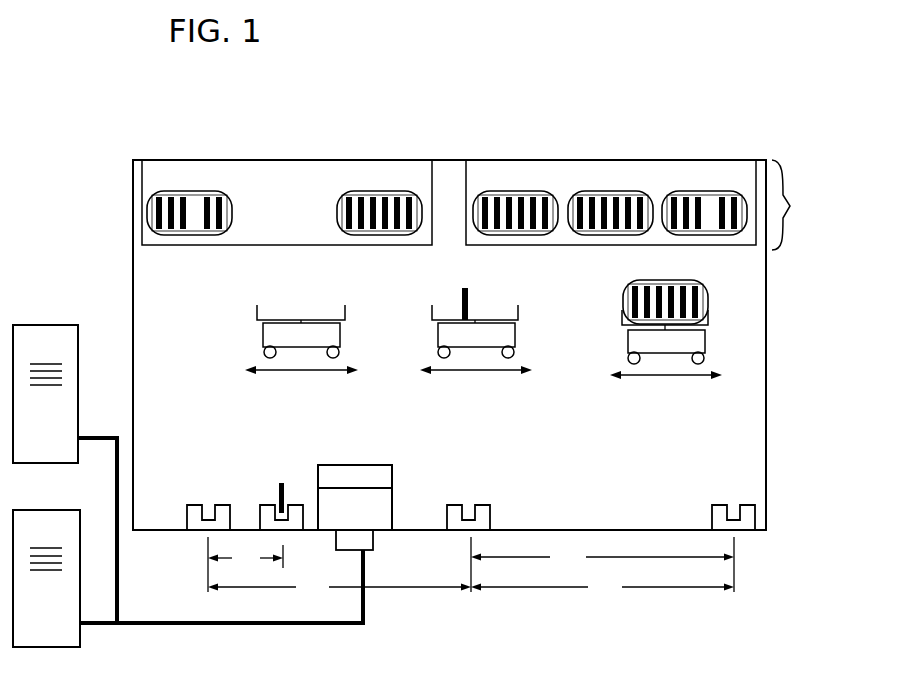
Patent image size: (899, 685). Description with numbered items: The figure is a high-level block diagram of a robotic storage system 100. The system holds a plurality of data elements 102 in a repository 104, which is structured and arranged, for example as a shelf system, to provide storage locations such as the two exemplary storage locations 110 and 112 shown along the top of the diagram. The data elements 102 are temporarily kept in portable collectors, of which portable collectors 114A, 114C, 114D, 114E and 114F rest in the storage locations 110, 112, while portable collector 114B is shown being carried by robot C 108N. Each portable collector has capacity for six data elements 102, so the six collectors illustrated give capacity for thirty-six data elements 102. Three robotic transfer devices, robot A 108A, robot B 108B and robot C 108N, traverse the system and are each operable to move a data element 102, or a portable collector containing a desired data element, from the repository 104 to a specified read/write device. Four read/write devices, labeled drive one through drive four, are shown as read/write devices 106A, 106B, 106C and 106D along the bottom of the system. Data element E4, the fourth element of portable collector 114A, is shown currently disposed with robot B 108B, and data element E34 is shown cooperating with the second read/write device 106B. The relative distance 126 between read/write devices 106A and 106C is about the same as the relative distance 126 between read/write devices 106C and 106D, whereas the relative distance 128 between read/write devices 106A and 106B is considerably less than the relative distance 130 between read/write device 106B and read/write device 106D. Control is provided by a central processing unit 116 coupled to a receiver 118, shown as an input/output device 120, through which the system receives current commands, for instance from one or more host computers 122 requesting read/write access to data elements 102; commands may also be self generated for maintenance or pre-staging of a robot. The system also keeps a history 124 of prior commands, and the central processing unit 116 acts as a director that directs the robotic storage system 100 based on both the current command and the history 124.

The robotic storage system 100 is at (112, 133).
The data element 102 is at (358, 191).
The repository 104 is at (799, 205).
The data read/write device 106A is at (198, 522).
The data read/write device 106B is at (300, 510).
The data read/write device 106C is at (487, 512).
The data read/write device 106D is at (745, 525).
The robot 108A is at (301, 353).
The robot 108B is at (476, 353).
The robot 108N is at (666, 356).
The storage location 110 is at (282, 183).
The storage location 112 is at (503, 178).
The portable collector 114A is at (170, 191).
The portable collector 114B is at (709, 302).
The portable collector 114C is at (377, 191).
The portable collector 114D is at (520, 191).
The portable collector 114E is at (612, 189).
The portable collector 114F is at (707, 189).
The central processing unit 116 is at (394, 507).
The receiver 118 is at (373, 540).
The input/output device 120 is at (354, 540).
The host computer 122 is at (188, 486).
The history 124 is at (388, 465).
The relative distance 126 is at (471, 587).
The relative distance 128 is at (245, 564).
The relative distance 130 is at (602, 564).
The data element E4 is at (468, 297).
The data element E34 is at (280, 485).